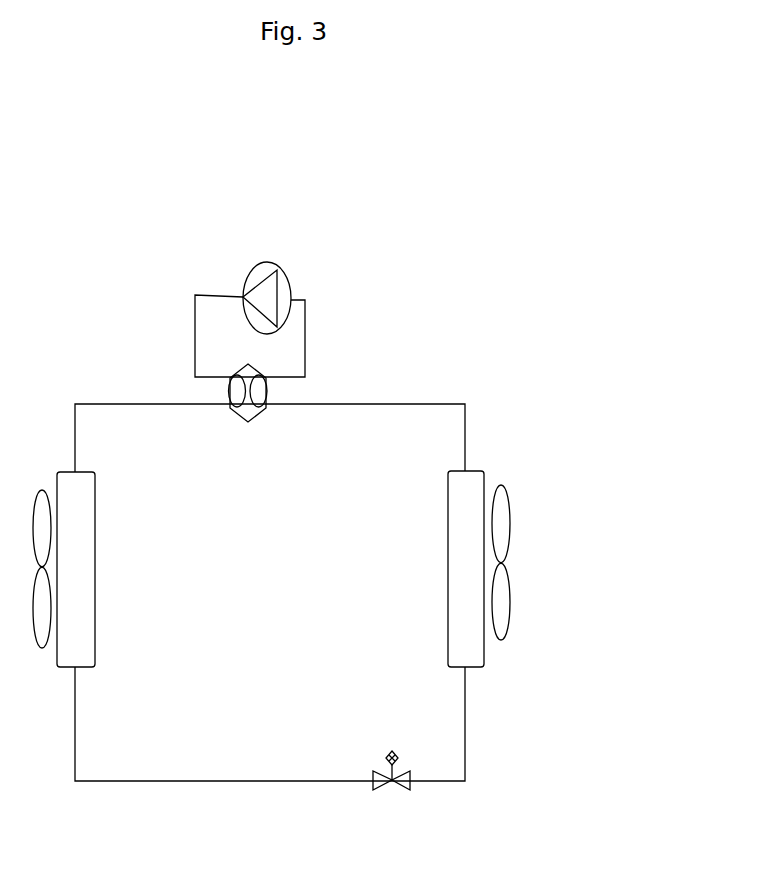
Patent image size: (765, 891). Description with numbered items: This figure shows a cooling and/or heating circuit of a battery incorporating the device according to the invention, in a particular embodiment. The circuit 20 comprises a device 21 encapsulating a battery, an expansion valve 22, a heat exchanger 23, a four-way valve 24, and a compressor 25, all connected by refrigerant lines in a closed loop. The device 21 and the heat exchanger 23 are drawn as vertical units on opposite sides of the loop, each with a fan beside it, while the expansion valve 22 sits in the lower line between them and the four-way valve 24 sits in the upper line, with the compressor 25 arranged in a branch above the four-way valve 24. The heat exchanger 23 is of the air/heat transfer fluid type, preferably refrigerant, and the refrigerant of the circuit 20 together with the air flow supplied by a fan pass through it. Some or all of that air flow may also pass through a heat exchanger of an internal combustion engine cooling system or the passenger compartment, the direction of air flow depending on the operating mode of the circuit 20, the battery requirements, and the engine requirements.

The circuit 20 is at (404, 393).
The device encapsulating a battery 21 is at (110, 565).
The expansion valve 22 is at (417, 799).
The heat exchanger 23 is at (499, 658).
The four-way valve 24 is at (261, 434).
The compressor 25 is at (304, 273).